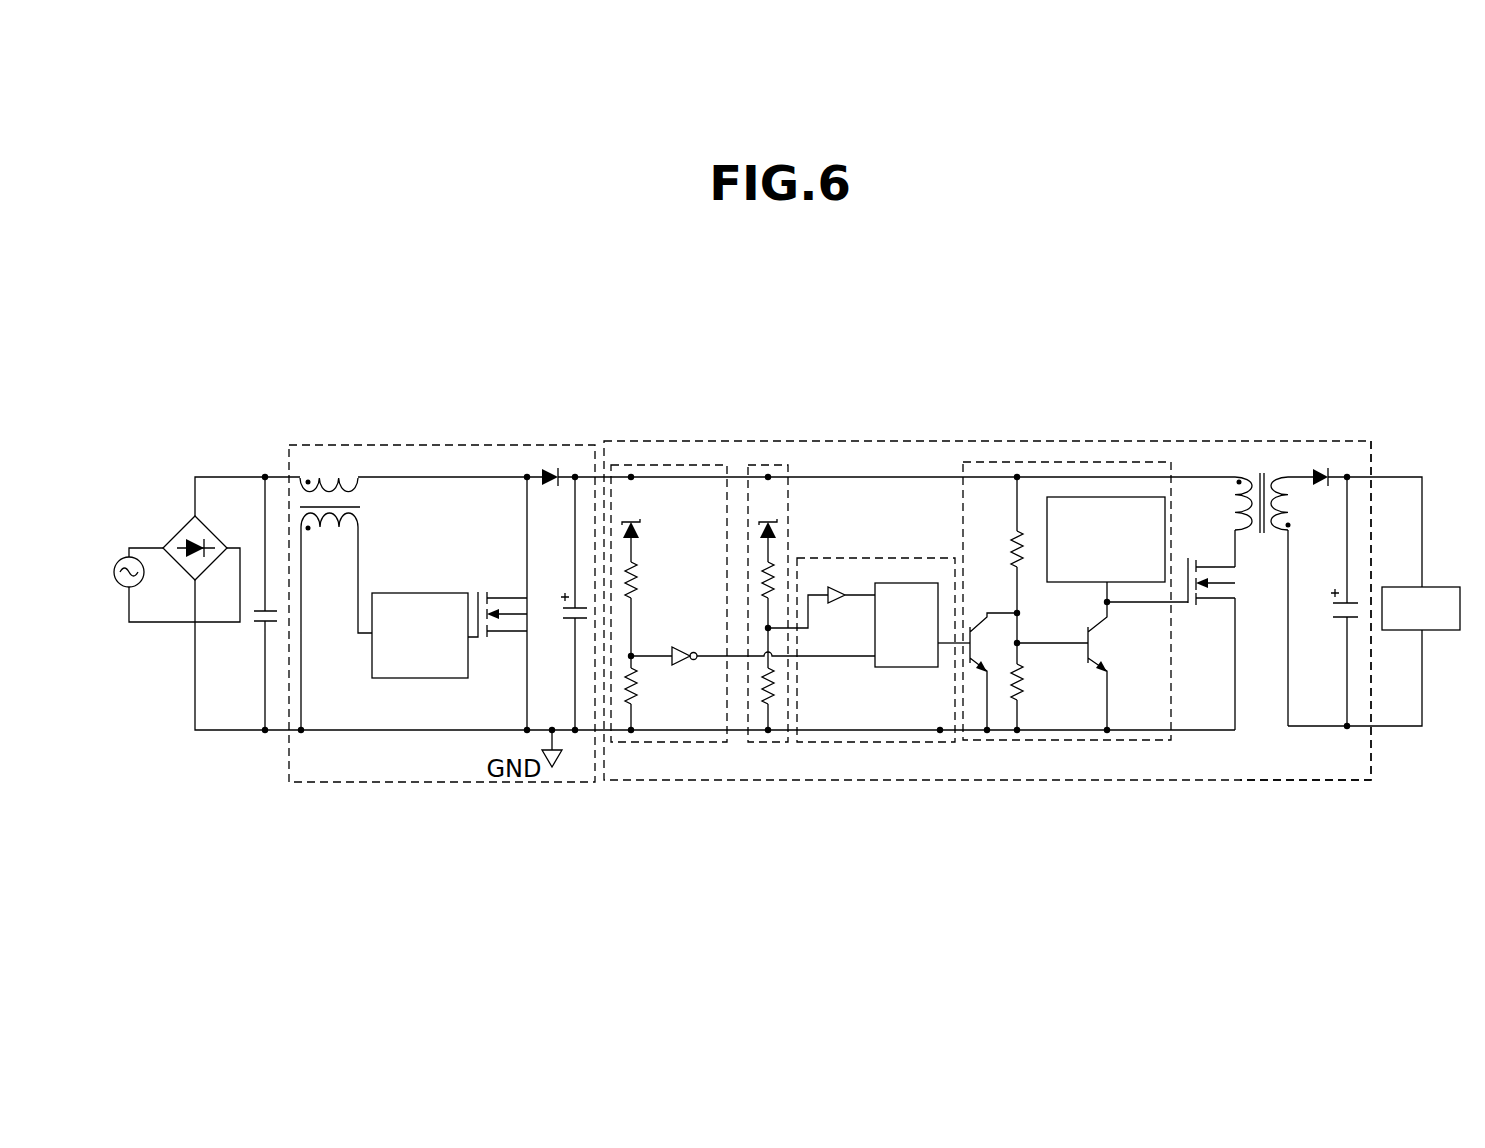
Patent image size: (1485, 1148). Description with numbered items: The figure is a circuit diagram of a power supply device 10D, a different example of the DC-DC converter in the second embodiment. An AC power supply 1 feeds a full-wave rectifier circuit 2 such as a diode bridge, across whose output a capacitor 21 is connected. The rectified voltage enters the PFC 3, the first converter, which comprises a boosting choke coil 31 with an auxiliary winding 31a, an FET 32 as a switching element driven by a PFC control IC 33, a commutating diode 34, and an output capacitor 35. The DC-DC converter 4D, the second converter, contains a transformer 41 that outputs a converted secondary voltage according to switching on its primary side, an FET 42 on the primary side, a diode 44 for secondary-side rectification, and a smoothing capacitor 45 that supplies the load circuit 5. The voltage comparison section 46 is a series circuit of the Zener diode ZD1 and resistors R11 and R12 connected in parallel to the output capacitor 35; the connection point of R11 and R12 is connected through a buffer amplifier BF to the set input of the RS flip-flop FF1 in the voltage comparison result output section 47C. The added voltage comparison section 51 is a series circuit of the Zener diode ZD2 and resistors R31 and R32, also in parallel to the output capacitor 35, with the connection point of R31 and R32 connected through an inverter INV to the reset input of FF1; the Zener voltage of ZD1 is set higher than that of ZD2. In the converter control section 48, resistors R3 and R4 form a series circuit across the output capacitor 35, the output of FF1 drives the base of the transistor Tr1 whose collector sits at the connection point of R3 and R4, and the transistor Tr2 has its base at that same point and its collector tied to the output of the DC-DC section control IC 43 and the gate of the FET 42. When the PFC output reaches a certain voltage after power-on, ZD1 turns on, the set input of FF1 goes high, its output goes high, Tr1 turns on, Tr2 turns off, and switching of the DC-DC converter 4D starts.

The AC power supply 1 is at (120, 565).
The full-wave rectifier circuit 2 is at (210, 538).
The capacitor 21 is at (254, 628).
The PFC 3 is at (432, 783).
The boosting choke coil 31 is at (360, 484).
The auxiliary winding 31a is at (358, 520).
The FET 32 is at (484, 591).
The PFC control IC 33 is at (445, 592).
The commutating diode 34 is at (553, 468).
The output capacitor 35 is at (562, 618).
The power supply device 10D is at (860, 384).
The voltage comparison section 51 is at (669, 465).
The voltage comparison section 46 is at (770, 465).
The voltage comparison result output section 47C is at (892, 557).
The converter control section 48 is at (1155, 462).
The DC-DC section control IC 43 is at (1085, 497).
The transformer 41 is at (1267, 468).
The FET 42 is at (1191, 606).
The diode 44 is at (1320, 467).
The smoothing capacitor 45 is at (1335, 609).
The load circuit 5 is at (1447, 587).
The DC-DC converter 4D is at (1346, 781).
The Zener diode ZD1 is at (780, 527).
The Zener diode ZD2 is at (659, 528).
The resistor R11 is at (778, 572).
The resistor R12 is at (773, 700).
The resistor R31 is at (658, 583).
The resistor R32 is at (658, 687).
The resistor R3 is at (997, 549).
The resistor R4 is at (1036, 684).
The inverter INV is at (753, 643).
The buffer amplifier BF is at (821, 609).
The RS flip-flop FF1 is at (910, 668).
The transistor Tr1 is at (993, 659).
The transistor Tr2 is at (1102, 656).